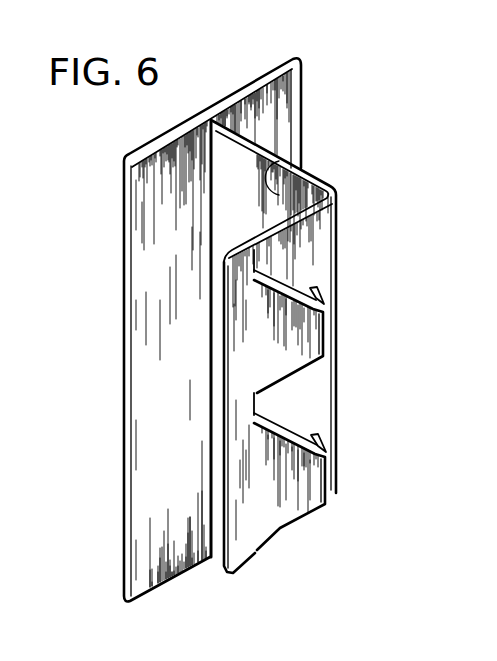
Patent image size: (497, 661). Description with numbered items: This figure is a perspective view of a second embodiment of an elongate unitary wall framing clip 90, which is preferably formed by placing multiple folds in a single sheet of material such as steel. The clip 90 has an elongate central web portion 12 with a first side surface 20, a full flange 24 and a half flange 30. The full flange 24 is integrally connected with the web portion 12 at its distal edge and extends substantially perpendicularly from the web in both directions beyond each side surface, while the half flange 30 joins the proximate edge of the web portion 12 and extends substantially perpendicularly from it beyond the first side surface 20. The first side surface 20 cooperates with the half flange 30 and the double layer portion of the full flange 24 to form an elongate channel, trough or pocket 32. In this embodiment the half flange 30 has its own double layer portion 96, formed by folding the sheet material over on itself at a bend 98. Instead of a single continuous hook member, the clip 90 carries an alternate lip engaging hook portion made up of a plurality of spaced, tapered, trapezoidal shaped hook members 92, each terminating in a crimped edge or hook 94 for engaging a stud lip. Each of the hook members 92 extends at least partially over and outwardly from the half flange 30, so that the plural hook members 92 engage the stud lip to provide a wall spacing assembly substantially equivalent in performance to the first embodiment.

The web portion 12 is at (260, 143).
The first side surface 20 is at (280, 153).
The full flange 24 is at (186, 120).
The half flange 30 is at (310, 240).
The channel 32 is at (197, 205).
The wall framing clip 90 is at (116, 156).
The hook members 92 is at (305, 338).
The hook 94 is at (318, 293).
The double layer portion 96 is at (222, 257).
The bend 98 is at (222, 265).